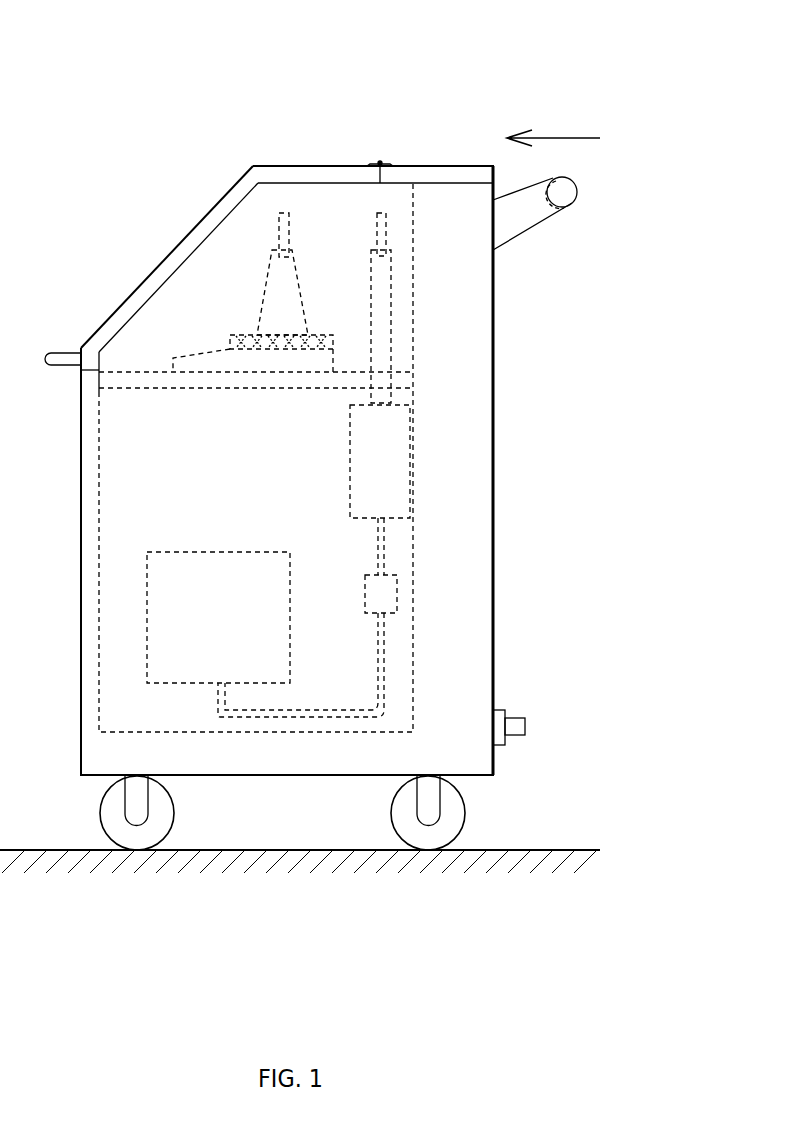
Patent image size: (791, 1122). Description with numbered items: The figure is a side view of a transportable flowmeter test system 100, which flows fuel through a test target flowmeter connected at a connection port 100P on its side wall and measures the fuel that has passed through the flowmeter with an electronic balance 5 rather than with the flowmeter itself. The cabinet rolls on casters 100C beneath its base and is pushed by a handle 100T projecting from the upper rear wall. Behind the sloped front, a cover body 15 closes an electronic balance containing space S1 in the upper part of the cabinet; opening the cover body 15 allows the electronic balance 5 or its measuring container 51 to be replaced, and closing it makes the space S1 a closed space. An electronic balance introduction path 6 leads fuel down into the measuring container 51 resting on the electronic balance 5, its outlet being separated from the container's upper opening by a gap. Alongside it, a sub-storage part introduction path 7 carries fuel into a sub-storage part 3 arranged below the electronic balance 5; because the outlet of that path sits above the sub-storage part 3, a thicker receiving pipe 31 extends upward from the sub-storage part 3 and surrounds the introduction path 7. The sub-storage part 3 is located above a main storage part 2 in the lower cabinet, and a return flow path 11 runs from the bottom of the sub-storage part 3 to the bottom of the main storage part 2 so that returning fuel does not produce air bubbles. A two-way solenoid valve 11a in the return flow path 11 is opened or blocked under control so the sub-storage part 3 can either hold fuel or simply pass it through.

The flowmeter test system 100 is at (124, 91).
The cover body 15 is at (186, 237).
The handle 100T is at (577, 185).
The electronic balance containing space S1 is at (253, 253).
The electronic balance introduction path 6 is at (287, 230).
The measuring container 51 is at (266, 284).
The electronic balance 5 is at (213, 348).
The sub-storage part introduction path 7 is at (377, 226).
The receiving pipe 31 is at (371, 296).
The sub-storage part 3 is at (350, 458).
The two-way solenoid valve 11a is at (365, 590).
The return flow path 11 is at (378, 645).
The main storage part 2 is at (218, 552).
The connection port 100P is at (525, 728).
The casters 100C is at (101, 820).